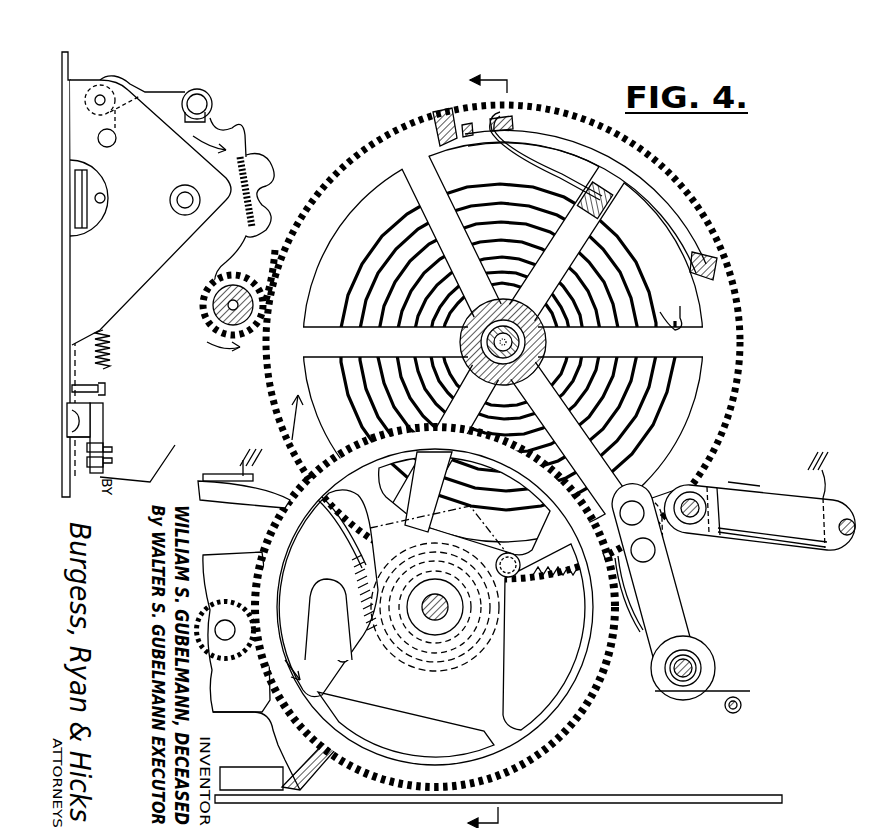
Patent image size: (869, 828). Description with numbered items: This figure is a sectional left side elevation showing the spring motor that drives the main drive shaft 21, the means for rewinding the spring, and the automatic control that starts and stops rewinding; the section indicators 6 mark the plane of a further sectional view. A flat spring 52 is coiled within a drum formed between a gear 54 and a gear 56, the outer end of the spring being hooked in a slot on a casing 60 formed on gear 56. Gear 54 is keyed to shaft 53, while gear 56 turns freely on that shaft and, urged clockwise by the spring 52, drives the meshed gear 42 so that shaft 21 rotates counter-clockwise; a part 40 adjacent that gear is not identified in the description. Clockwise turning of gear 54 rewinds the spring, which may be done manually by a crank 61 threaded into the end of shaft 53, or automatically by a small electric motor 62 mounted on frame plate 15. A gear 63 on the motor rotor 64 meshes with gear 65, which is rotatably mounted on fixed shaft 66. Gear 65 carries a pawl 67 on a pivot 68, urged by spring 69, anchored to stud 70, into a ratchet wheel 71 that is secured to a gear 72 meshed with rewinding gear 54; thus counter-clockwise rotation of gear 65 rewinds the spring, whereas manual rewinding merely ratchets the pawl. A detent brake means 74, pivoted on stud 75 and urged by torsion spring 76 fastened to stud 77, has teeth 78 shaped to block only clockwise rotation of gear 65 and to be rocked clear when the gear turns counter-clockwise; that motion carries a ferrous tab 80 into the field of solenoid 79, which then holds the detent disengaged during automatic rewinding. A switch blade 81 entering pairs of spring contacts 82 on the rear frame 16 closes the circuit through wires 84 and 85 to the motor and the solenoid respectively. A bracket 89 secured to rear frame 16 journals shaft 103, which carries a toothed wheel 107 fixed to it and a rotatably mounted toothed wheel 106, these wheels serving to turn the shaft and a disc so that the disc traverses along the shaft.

The section line 6 is at (494, 450).
The frame plate 15 is at (583, 800).
The rear frame 16 is at (72, 72).
The shaft 21 is at (268, 270).
The pinion 40 is at (212, 306).
The gear 42 is at (197, 333).
The spring 52 is at (679, 332).
The shaft 53 is at (480, 342).
The gear 54 is at (503, 342).
The gear 56 is at (636, 148).
The casing 60 is at (700, 210).
The crank 61 is at (540, 342).
The electric motor 62 is at (269, 671).
The gear 63 is at (250, 613).
The rotor 64 is at (232, 636).
The gear 65 is at (435, 607).
The shaft 66 is at (432, 612).
The pawl 67 is at (490, 534).
The pivot 68 is at (512, 570).
The spring 69 is at (345, 625).
The stud 70 is at (343, 662).
The ratchet wheel 71 is at (478, 655).
The gear 72 is at (480, 608).
The detent brake means 74 is at (667, 600).
The stud 75 is at (673, 673).
The torsion spring 76 is at (722, 690).
The stud 77 is at (726, 712).
The teeth 78 is at (639, 577).
The solenoid 79 is at (759, 501).
The ferrous tab 80 is at (693, 530).
The switch blade 81 is at (105, 432).
The spring contacts 82 is at (114, 455).
The wire 84 is at (200, 478).
The wire 85 is at (172, 445).
The bracket 89 is at (150, 210).
The shaft 103 is at (184, 192).
The toothed wheel 106 is at (252, 158).
The toothed wheel 107 is at (233, 140).